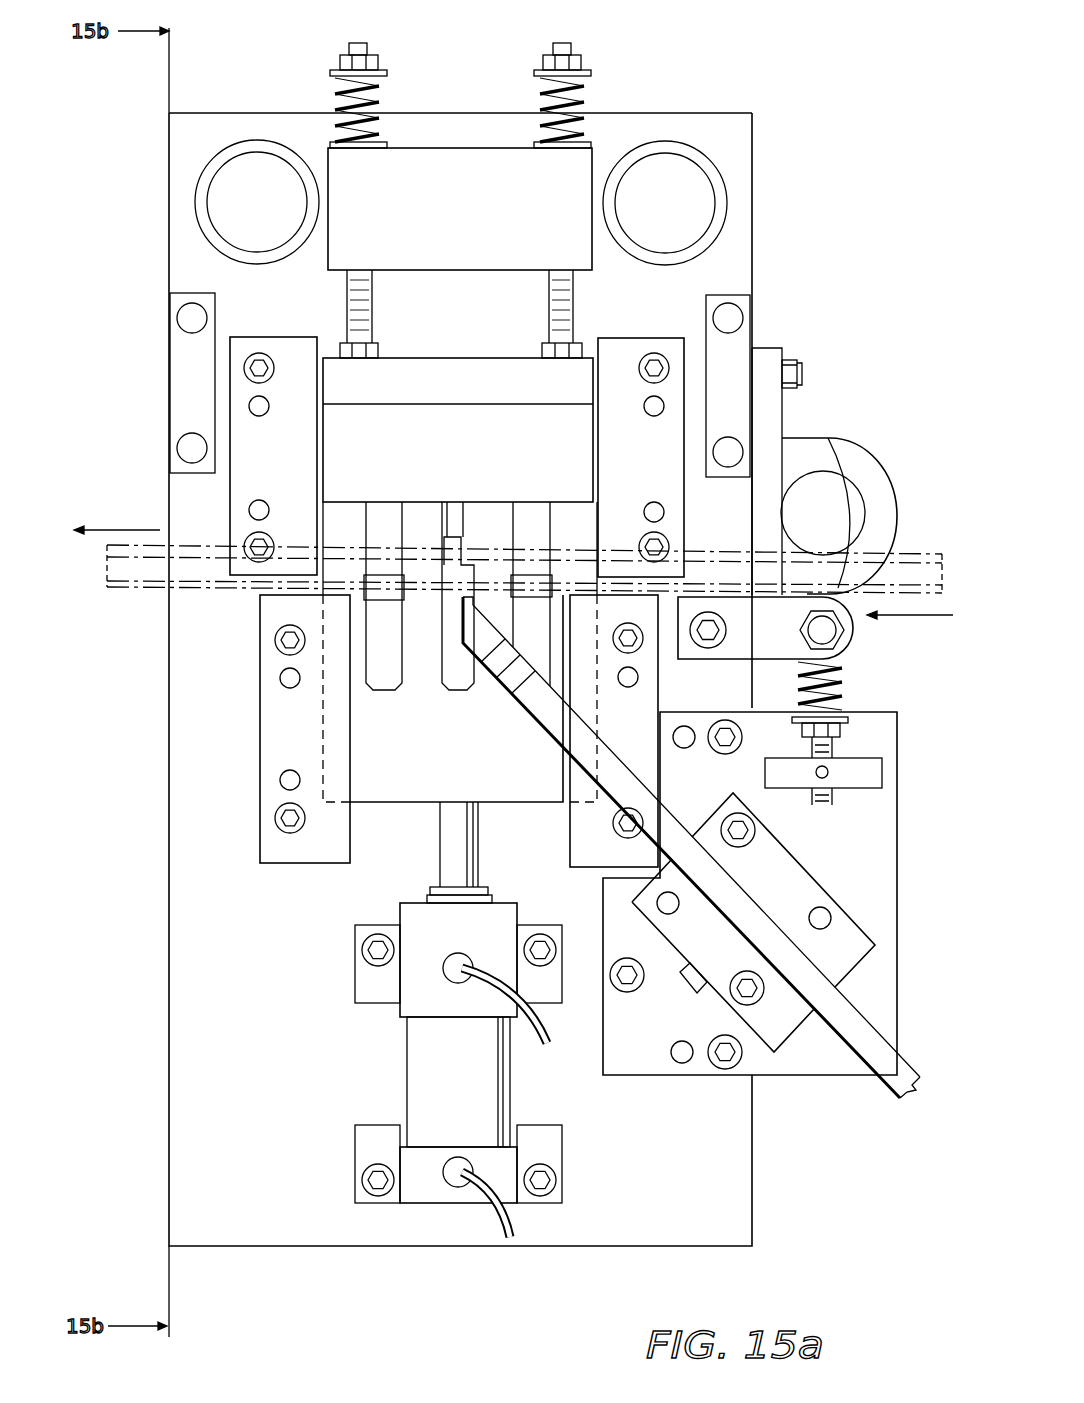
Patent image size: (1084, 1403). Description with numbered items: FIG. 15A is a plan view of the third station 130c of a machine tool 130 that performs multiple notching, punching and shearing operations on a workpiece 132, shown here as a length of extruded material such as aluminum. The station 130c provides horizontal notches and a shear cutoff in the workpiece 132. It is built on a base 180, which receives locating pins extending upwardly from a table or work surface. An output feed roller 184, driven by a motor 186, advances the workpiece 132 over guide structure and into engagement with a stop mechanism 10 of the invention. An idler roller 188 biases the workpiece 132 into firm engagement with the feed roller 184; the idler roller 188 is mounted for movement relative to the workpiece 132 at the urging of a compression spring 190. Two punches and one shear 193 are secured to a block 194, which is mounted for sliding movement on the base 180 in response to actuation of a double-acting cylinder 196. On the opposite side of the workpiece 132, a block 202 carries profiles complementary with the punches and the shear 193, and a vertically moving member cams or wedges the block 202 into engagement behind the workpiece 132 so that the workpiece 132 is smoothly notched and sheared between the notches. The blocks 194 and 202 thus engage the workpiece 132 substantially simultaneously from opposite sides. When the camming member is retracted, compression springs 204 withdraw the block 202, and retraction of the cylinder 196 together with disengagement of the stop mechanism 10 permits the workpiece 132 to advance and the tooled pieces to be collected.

The stop mechanism 10 is at (790, 885).
The machine tool 130 is at (670, 104).
The third station 130c is at (298, 110).
The workpiece 132 is at (908, 553).
The base 180 is at (633, 1180).
The output feed roller 184 is at (878, 461).
The motor 186 is at (837, 520).
The idler roller 188 is at (856, 641).
The compression spring 190 is at (846, 686).
The shear 193 is at (444, 668).
The block 194 is at (418, 781).
The double-acting cylinder 196 is at (428, 1072).
The block 202 is at (423, 463).
The compression springs 204 is at (376, 106).